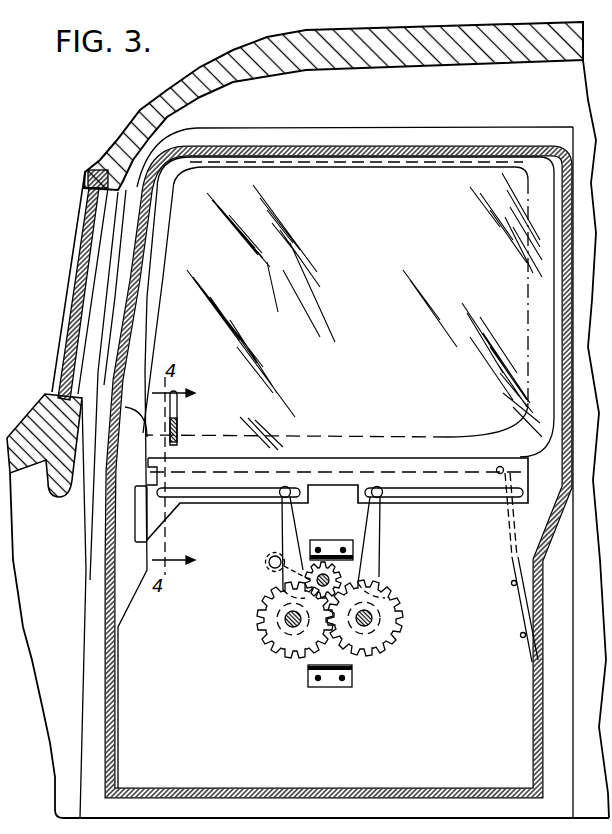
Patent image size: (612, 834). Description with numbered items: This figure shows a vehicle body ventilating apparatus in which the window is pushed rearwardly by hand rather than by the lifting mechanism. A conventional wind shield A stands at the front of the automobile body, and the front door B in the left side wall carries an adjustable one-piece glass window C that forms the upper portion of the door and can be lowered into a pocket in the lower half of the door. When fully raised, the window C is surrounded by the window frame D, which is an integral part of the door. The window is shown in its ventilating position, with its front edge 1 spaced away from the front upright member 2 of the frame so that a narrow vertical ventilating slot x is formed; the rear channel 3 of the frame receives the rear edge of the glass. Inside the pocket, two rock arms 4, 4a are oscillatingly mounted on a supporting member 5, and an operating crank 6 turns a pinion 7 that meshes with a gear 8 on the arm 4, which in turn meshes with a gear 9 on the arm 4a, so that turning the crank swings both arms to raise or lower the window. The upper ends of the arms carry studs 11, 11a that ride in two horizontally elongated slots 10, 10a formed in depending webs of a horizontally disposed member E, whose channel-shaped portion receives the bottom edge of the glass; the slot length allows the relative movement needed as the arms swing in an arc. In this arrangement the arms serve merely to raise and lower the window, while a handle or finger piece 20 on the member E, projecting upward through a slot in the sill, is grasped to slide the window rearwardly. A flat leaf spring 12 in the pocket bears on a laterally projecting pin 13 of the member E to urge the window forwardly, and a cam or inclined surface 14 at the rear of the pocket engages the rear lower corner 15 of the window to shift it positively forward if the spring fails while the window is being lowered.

The front edge 1 is at (173, 250).
The front upright member 2 is at (140, 303).
The rear window channel / sealing strip 3 is at (563, 296).
The rock arm 4 is at (287, 536).
The rock arm 4a is at (373, 543).
The supporting member 5 is at (340, 658).
The operating crank 6 is at (268, 566).
The pinion 7 is at (333, 541).
The gear 8 is at (272, 645).
The gear 9 is at (390, 637).
The elongated slot 10 is at (226, 492).
The elongated slot 10a is at (440, 490).
The stud 11 is at (282, 489).
The stud 11a is at (379, 487).
The spring 12 is at (511, 556).
The laterally-projecting pin 13 is at (498, 467).
The cam or inclined surface 14 is at (549, 531).
The rear lower corner 15 is at (529, 474).
The handle or finger piece 20 is at (180, 422).
The window shield A is at (73, 250).
The front door B is at (88, 592).
The window C is at (386, 172).
The window frame D is at (150, 182).
The horizontally-disposed member E is at (335, 452).
The ventilating slot X is at (150, 326).